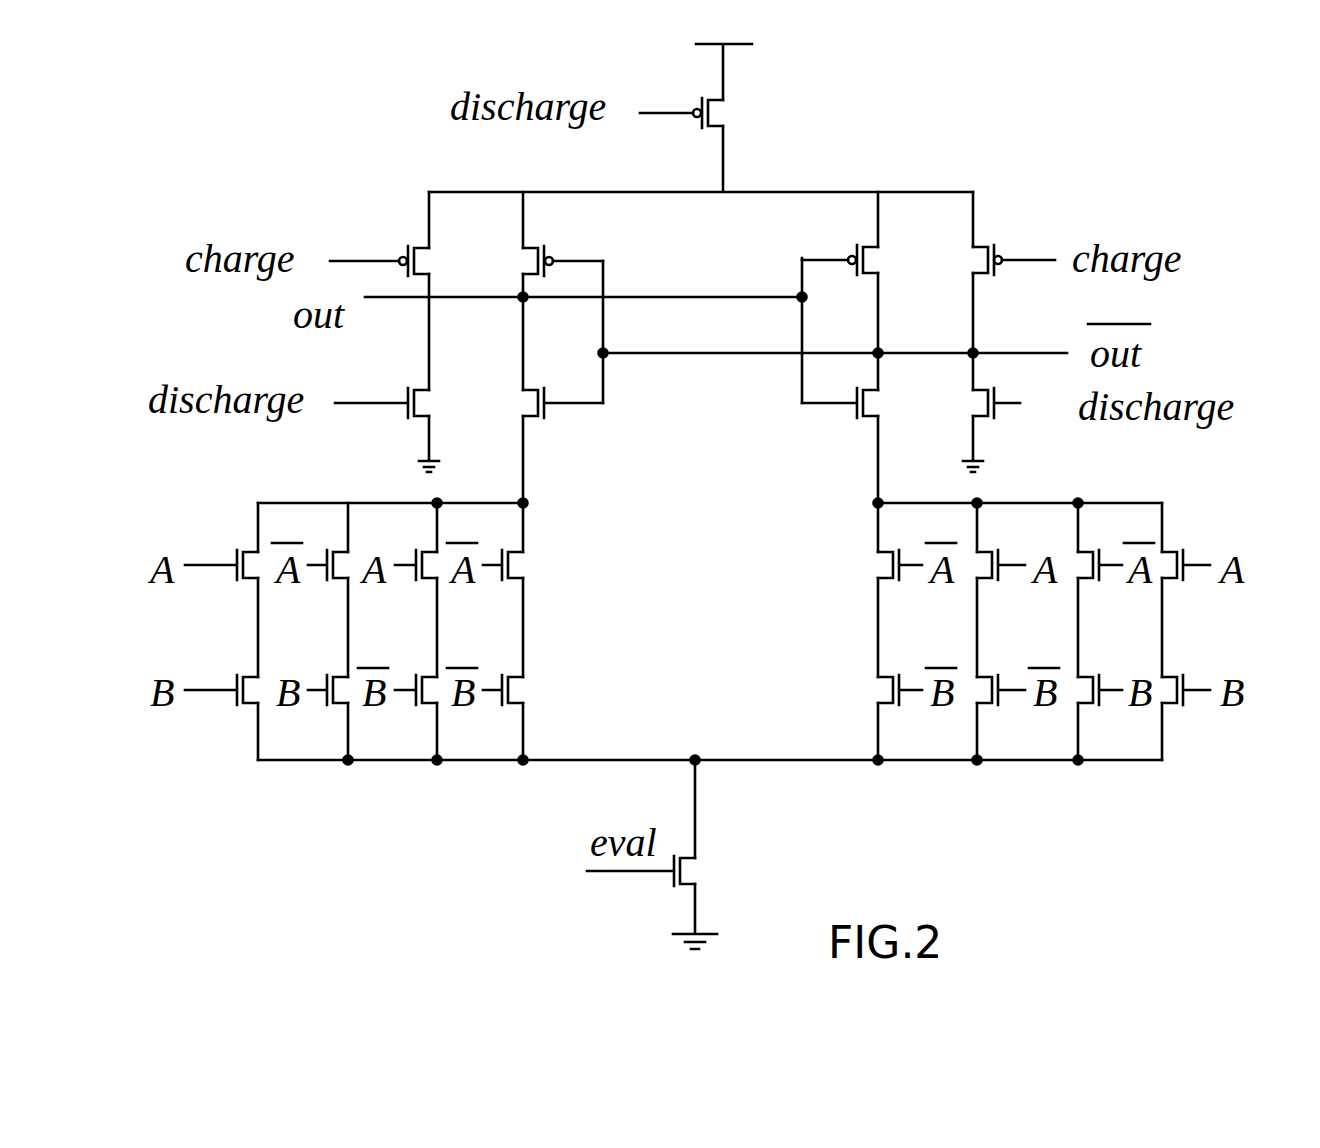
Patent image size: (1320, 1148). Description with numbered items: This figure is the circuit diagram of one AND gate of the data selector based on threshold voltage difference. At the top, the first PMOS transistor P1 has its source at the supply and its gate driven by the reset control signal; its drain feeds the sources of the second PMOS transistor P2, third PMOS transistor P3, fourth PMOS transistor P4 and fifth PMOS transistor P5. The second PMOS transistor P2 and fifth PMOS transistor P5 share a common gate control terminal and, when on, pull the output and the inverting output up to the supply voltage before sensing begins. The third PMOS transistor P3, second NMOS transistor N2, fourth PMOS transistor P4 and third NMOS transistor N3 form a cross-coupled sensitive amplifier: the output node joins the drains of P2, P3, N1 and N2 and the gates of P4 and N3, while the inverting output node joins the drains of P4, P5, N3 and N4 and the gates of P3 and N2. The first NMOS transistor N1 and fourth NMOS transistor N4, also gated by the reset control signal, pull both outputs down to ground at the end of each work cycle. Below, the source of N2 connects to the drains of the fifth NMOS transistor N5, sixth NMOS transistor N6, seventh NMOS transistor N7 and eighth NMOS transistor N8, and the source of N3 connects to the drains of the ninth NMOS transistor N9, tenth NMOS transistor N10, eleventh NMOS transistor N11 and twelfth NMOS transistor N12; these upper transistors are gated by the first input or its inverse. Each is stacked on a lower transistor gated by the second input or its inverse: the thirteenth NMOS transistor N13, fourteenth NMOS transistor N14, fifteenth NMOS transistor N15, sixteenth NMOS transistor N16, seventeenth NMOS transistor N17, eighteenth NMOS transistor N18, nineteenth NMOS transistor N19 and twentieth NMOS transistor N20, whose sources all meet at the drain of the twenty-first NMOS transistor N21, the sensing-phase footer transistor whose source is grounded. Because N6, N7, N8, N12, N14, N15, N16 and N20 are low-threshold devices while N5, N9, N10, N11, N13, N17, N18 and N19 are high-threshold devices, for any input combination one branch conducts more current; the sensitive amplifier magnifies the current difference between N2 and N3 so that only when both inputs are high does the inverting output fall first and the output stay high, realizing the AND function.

The first PMOS transistor P1 is at (705, 113).
The second PMOS transistor P2 is at (397, 262).
The third PMOS transistor P3 is at (545, 262).
The fourth PMOS transistor P4 is at (859, 260).
The fifth PMOS transistor P5 is at (996, 260).
The first NMOS transistor N1 is at (403, 404).
The second NMOS transistor N2 is at (544, 404).
The third NMOS transistor N3 is at (861, 404).
The fourth NMOS transistor N4 is at (977, 404).
The fifth NMOS transistor N5 is at (221, 590).
The sixth NMOS transistor N6 is at (325, 590).
The seventh NMOS transistor N7 is at (415, 590).
The eighth NMOS transistor N8 is at (496, 590).
The ninth NMOS transistor N9 is at (909, 590).
The tenth NMOS transistor N10 is at (1008, 590).
The eleventh NMOS transistor N11 is at (1111, 590).
The twelfth NMOS transistor N12 is at (1195, 590).
The thirteenth NMOS transistor N13 is at (221, 714).
The fourteenth NMOS transistor N14 is at (319, 714).
The fifteenth NMOS transistor N15 is at (407, 714).
The sixteenth NMOS transistor N16 is at (494, 714).
The seventeenth NMOS transistor N17 is at (911, 714).
The eighteenth NMOS transistor N18 is at (1008, 714).
The nineteenth NMOS transistor N19 is at (1110, 714).
The twentieth NMOS transistor N20 is at (1195, 714).
The twenty-first NMOS transistor N21 is at (672, 871).